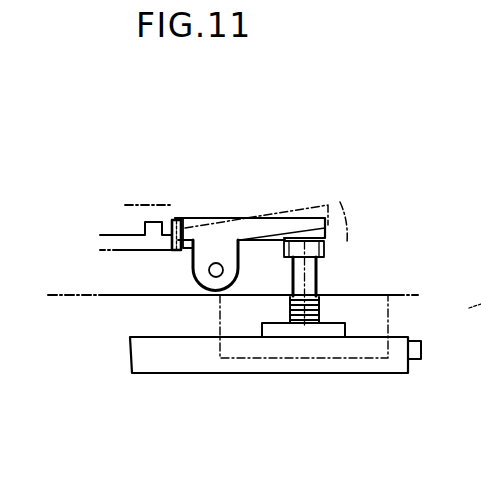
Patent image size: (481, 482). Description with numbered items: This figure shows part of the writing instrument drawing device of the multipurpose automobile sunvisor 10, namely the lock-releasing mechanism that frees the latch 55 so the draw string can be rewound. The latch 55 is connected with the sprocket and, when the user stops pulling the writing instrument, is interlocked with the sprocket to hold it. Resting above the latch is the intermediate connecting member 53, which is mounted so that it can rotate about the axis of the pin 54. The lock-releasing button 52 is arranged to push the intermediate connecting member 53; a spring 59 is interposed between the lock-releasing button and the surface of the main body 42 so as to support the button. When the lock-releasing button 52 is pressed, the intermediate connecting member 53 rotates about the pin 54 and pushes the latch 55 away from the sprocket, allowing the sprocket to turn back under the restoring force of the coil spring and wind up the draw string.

The assembly 10 is at (67, 283).
The latch 55 is at (128, 241).
The pin 54 is at (217, 262).
The intermediate connecting member 53 is at (303, 228).
The spring 59 is at (327, 295).
The lock-releasing button 52 is at (318, 328).
The base block 42 is at (237, 317).